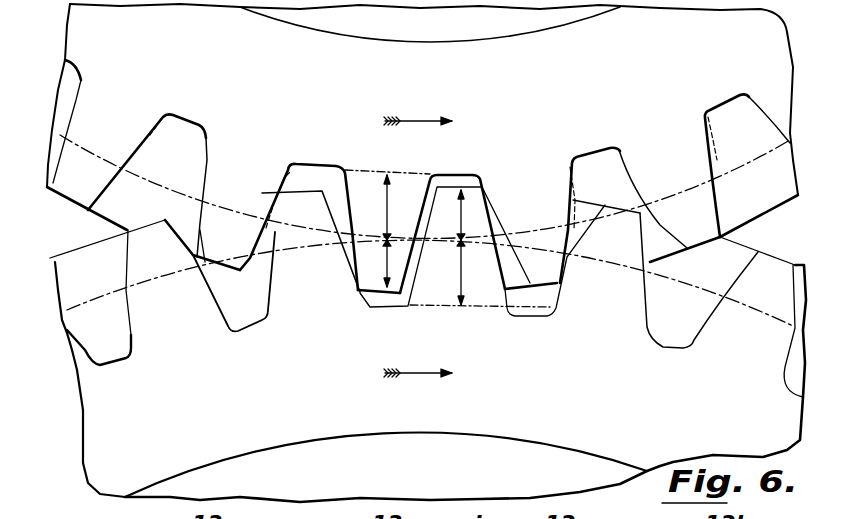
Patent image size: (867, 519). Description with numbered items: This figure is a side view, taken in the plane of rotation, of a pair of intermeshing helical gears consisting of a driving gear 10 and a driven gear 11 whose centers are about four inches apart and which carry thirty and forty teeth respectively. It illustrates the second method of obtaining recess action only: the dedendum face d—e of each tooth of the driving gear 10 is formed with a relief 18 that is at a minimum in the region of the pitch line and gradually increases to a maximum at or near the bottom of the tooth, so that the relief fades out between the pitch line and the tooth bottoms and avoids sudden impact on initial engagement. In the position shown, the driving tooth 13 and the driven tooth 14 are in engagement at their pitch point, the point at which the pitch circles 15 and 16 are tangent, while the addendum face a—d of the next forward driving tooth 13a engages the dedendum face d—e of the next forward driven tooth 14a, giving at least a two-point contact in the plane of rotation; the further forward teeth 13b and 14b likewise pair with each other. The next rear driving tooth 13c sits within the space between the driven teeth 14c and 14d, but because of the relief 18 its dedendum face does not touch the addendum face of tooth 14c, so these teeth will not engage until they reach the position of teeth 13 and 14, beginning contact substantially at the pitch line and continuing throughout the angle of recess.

The driving gear 10 is at (422, 120).
The driven gear 11 is at (428, 361).
The driving tooth 13 is at (416, 247).
The next forward adjacent driving tooth 13a is at (543, 243).
The driving tooth 13b is at (699, 247).
The next rear adjacent driving tooth 13c is at (220, 250).
The driven tooth 14 is at (430, 284).
The next forward adjacent driven tooth 14a is at (623, 215).
The driven tooth 14b is at (747, 196).
The driven tooth 14c is at (300, 235).
The driven tooth 14d is at (147, 217).
The pitch circle of the driving gear 15 is at (520, 233).
The pitch circle of the driven gear 16 is at (636, 268).
The relief 18 is at (163, 122).
The addendum face end point a is at (434, 238).
The pitch line point d is at (432, 240).
The dedendum face end point e is at (447, 237).